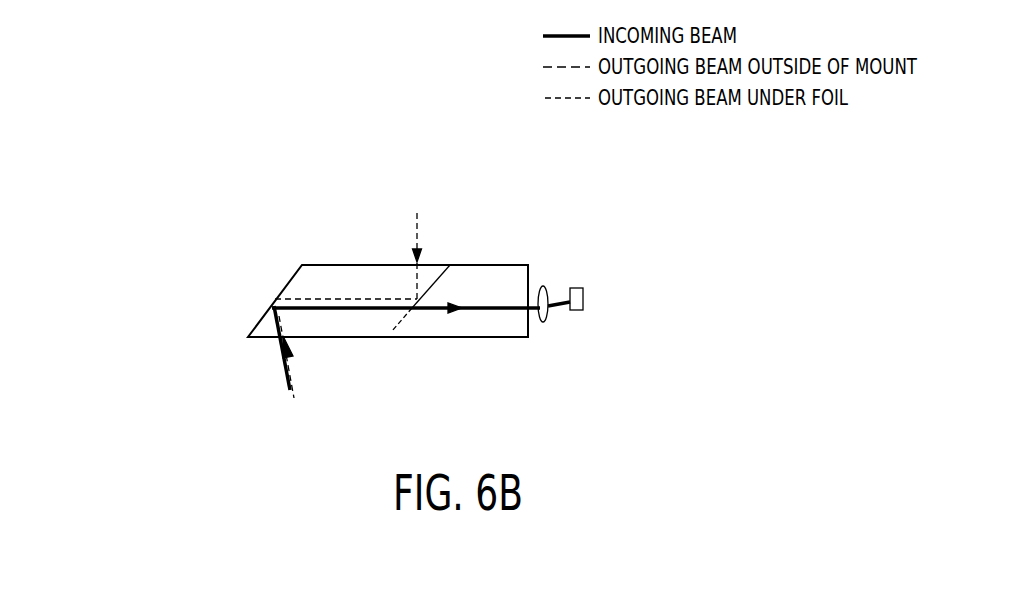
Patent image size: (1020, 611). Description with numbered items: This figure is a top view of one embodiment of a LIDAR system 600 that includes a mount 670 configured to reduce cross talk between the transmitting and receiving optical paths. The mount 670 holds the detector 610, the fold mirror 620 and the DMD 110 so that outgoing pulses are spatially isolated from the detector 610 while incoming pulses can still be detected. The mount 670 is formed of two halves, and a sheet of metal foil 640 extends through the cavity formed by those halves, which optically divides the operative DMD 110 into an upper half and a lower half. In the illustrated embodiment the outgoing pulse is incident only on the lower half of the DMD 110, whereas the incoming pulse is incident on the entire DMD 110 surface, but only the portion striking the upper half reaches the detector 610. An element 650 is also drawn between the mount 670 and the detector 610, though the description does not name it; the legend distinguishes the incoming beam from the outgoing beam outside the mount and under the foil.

The LIDAR system 600 is at (125, 182).
The DMD 110 is at (262, 266).
The mount 670 is at (487, 240).
The fold mirror 620 is at (425, 335).
The sheet of metal foil 640 is at (330, 337).
The lens 650 is at (541, 287).
The detector 610 is at (572, 335).